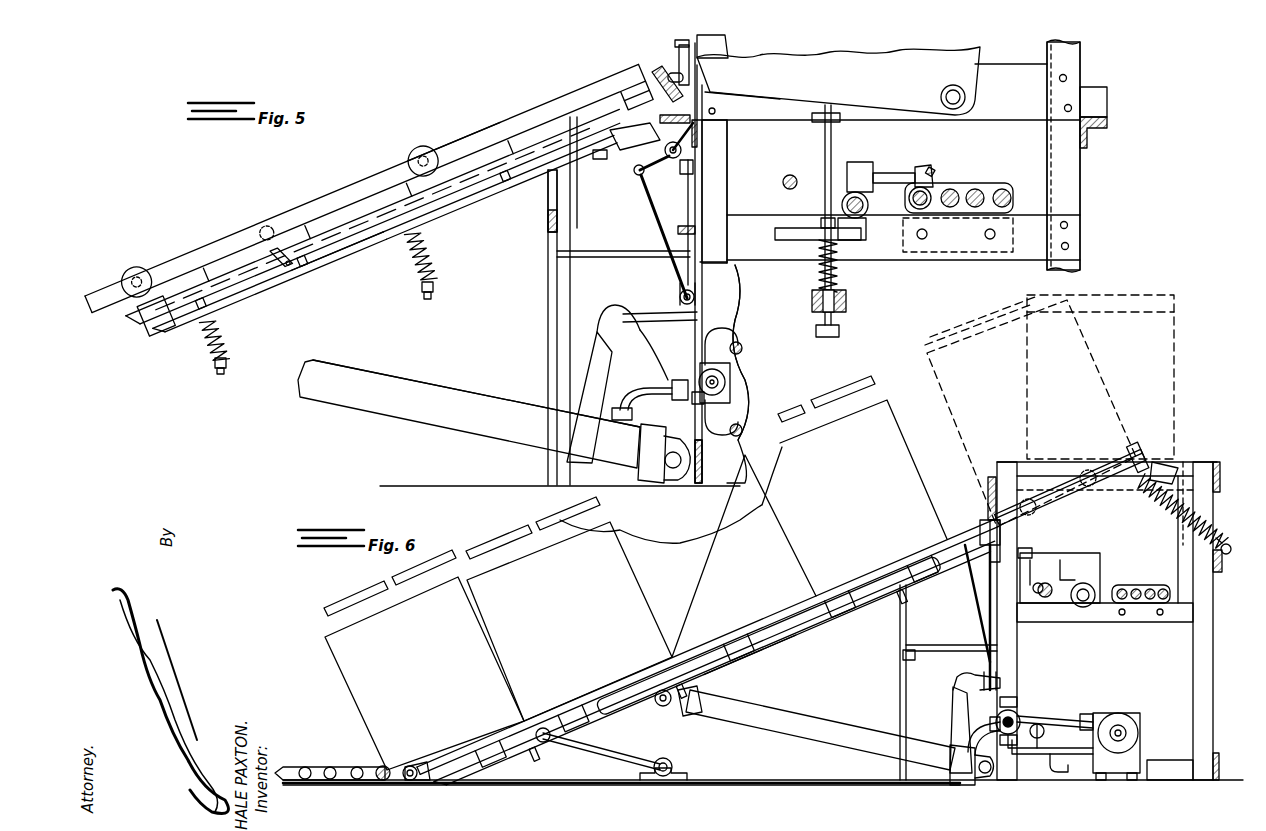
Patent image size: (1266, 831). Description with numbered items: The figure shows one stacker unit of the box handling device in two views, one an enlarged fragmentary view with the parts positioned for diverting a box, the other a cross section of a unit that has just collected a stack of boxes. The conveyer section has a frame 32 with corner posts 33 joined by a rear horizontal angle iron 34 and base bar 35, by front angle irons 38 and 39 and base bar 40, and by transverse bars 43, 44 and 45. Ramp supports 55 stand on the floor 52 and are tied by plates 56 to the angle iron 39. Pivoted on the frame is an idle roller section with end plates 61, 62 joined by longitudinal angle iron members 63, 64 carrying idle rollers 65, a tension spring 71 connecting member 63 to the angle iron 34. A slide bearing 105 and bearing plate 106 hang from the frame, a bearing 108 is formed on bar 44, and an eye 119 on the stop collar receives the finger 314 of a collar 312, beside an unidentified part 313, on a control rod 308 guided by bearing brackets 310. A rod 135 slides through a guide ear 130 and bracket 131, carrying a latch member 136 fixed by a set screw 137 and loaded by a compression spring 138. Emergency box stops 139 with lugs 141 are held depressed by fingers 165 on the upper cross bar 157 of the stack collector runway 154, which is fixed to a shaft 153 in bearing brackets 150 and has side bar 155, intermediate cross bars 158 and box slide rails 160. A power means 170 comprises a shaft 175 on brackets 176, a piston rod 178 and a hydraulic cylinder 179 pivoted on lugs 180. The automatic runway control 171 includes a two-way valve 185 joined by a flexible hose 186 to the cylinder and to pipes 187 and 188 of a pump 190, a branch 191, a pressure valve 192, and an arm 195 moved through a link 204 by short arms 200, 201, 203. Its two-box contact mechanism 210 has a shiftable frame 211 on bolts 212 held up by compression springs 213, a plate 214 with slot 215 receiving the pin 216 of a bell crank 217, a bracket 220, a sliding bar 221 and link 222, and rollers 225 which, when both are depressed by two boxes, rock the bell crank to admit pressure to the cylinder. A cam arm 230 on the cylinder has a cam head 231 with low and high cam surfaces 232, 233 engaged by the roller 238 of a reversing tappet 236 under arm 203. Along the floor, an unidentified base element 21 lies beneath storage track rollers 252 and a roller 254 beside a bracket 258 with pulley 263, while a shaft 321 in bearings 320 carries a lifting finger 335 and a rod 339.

In FIG. 6, the base rail 21 is at (638, 784).
In FIG. 5, the frame 32 is at (1102, 205).
In FIG. 5, the corner posts 33 is at (1080, 182).
In FIG. 6, the corner posts 33 is at (1017, 637).
In FIG. 5, the horizontal angle iron 34 is at (1094, 127).
In FIG. 6, the horizontal angle iron 34 is at (1216, 563).
In FIG. 5, the base bar 35 is at (548, 220).
In FIG. 6, the base bar 35 is at (1216, 764).
In FIG. 5, the horizontal angle iron 38 is at (720, 131).
In FIG. 5, the horizontal angle iron 39 is at (718, 263).
In FIG. 5, the base bar 40 is at (704, 485).
In FIG. 5, the transverse bar 43 is at (1005, 121).
In FIG. 6, the transverse bar 43 is at (1185, 514).
In FIG. 5, the transverse bar 44 is at (1037, 253).
In FIG. 6, the transverse bar 44 is at (1172, 619).
In FIG. 5, the transverse bar 45 is at (751, 430).
In FIG. 6, the transverse bar 45 is at (1162, 761).
In FIG. 5, the floor 52 is at (469, 486).
In FIG. 6, the floor 52 is at (796, 780).
In FIG. 6, the ramp supports 55 is at (903, 630).
In FIG. 5, the plates 56 is at (606, 250).
In FIG. 6, the plates 56 is at (936, 646).
In FIG. 5, the end plate 61 is at (968, 63).
In FIG. 6, the end plate 62 is at (1150, 510).
In FIG. 6, the longitudinal angle iron member 63 is at (1165, 474).
In FIG. 6, the longitudinal angle iron member 64 is at (987, 512).
In FIG. 6, the idle rollers 65 is at (1128, 465).
In FIG. 6, the tension spring 71 is at (1225, 545).
In FIG. 6, the slide bearing 105 is at (1089, 617).
In FIG. 6, the bearing plate 106 is at (1050, 560).
In FIG. 5, the bearing 108 is at (870, 213).
In FIG. 5, the eye 119 is at (885, 173).
In FIG. 5, the guide ear 130 is at (840, 121).
In FIG. 5, the bracket 131 is at (847, 299).
In FIG. 5, the rod 135 is at (824, 140).
In FIG. 5, the latch member 136 is at (792, 242).
In FIG. 5, the set screw 137 is at (820, 235).
In FIG. 5, the compression spring 138 is at (856, 241).
In FIG. 5, the emergency box stops 139 is at (727, 48).
In FIG. 6, the emergency box stops 139 is at (981, 526).
In FIG. 5, the lug 141 is at (653, 74).
In FIG. 6, the bearing brackets 150 is at (418, 780).
In FIG. 6, the shaft 153 is at (404, 779).
In FIG. 6, the stack collector runway 154 is at (490, 726).
In FIG. 5, the side bar 155 is at (546, 106).
In FIG. 6, the side bar 155 is at (558, 714).
In FIG. 5, the upper cross bar 157 is at (638, 93).
In FIG. 6, the upper cross bar 157 is at (985, 538).
In FIG. 6, the intermediate cross bars 158 is at (870, 575).
In FIG. 5, the box slide rails 160 is at (300, 205).
In FIG. 6, the box slide rails 160 is at (628, 676).
In FIG. 5, the fingers 165 is at (677, 77).
In FIG. 5, the power means 170 is at (484, 394).
In FIG. 5, the automatic runway control 171 is at (467, 234).
In FIG. 6, the shaft 175 is at (662, 707).
In FIG. 6, the brackets 176 is at (640, 708).
In FIG. 6, the piston rod 178 is at (690, 713).
In FIG. 5, the hydraulic cylinder 179 is at (391, 412).
In FIG. 6, the hydraulic cylinder 179 is at (813, 726).
In FIG. 5, the lugs 180 is at (670, 472).
In FIG. 6, the lugs 180 is at (992, 778).
In FIG. 5, the two-way valve 185 is at (727, 378).
In FIG. 6, the two-way valve 185 is at (1028, 717).
In FIG. 5, the flexible hose 186 is at (639, 384).
In FIG. 6, the flexible hose 186 is at (974, 740).
In FIG. 5, the pipe 187 is at (741, 336).
In FIG. 6, the pipe 187 is at (1082, 713).
In FIG. 5, the pipe 188 is at (738, 418).
In FIG. 6, the pipe 188 is at (1040, 758).
In FIG. 6, the pump 190 is at (1130, 724).
In FIG. 6, the branch 191 is at (1064, 775).
In FIG. 6, the pressure valve 192 is at (1045, 732).
In FIG. 5, the arm 195 is at (696, 403).
In FIG. 6, the arm 195 is at (1013, 710).
In FIG. 5, the short arm 200 is at (735, 102).
In FIG. 5, the short arm 201 is at (642, 174).
In FIG. 5, the short arm 203 is at (682, 151).
In FIG. 5, the link 204 is at (666, 267).
In FIG. 6, the link 204 is at (985, 664).
In FIG. 5, the two-box contact mechanism 210 is at (355, 300).
In FIG. 6, the two-box contact mechanism 210 is at (795, 650).
In FIG. 5, the shiftable frame 211 is at (343, 259).
In FIG. 5, the bolts 212 is at (426, 291).
In FIG. 5, the compression springs 213 is at (412, 261).
In FIG. 5, the plate 214 is at (297, 264).
In FIG. 5, the slot 215 is at (305, 245).
In FIG. 5, the pin 216 is at (310, 262).
In FIG. 5, the bell crank 217 is at (268, 261).
In FIG. 5, the bracket 220 is at (612, 140).
In FIG. 5, the sliding bar 221 is at (645, 171).
In FIG. 5, the link 222 is at (498, 184).
In FIG. 5, the rollers 225 is at (423, 144).
In FIG. 5, the cam arm 230 is at (590, 344).
In FIG. 6, the cam arm 230 is at (957, 697).
In FIG. 5, the cam head 231 is at (612, 307).
In FIG. 5, the low cam surface 232 is at (680, 300).
In FIG. 5, the high cam surface 233 is at (616, 309).
In FIG. 5, the reversing tappet 236 is at (684, 220).
In FIG. 6, the reversing tappet 236 is at (985, 618).
In FIG. 5, the roller 238 is at (700, 305).
In FIG. 6, the rollers 252 is at (355, 766).
In FIG. 6, the roller 254 is at (384, 765).
In FIG. 6, the bracket 258 is at (672, 780).
In FIG. 6, the pulley 263 is at (660, 778).
In FIG. 5, the rods 308 is at (990, 187).
In FIG. 5, the bearing brackets 310 is at (961, 186).
In FIG. 5, the collar 312 is at (921, 171).
In FIG. 5, the pin 313 is at (936, 170).
In FIG. 5, the finger 314 is at (880, 167).
In FIG. 6, the bearings 320 is at (1139, 588).
In FIG. 5, the shaft 321 is at (783, 186).
In FIG. 6, the shaft 321 is at (1040, 597).
In FIG. 6, the lifting finger 335 is at (1050, 600).
In FIG. 6, the rod 339 is at (1030, 552).